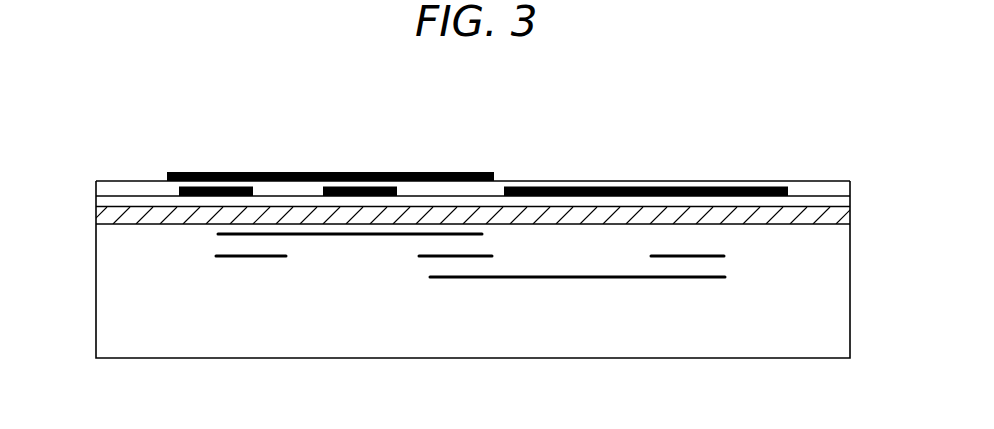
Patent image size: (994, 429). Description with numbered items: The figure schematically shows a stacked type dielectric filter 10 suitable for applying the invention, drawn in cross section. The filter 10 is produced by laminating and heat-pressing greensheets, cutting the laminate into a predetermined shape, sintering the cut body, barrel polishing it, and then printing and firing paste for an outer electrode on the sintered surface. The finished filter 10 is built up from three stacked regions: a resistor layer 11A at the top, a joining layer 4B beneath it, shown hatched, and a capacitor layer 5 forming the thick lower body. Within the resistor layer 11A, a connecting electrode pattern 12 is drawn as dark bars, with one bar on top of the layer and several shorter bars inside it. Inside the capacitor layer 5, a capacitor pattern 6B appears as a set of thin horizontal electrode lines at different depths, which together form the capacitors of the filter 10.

The filter 10 is at (762, 168).
The resistor layer 11A is at (823, 188).
The connecting electrode pattern 12 is at (539, 186).
The joining layer 4B is at (127, 220).
The capacitor layer 5 is at (832, 295).
The capacitor pattern 6B is at (533, 279).